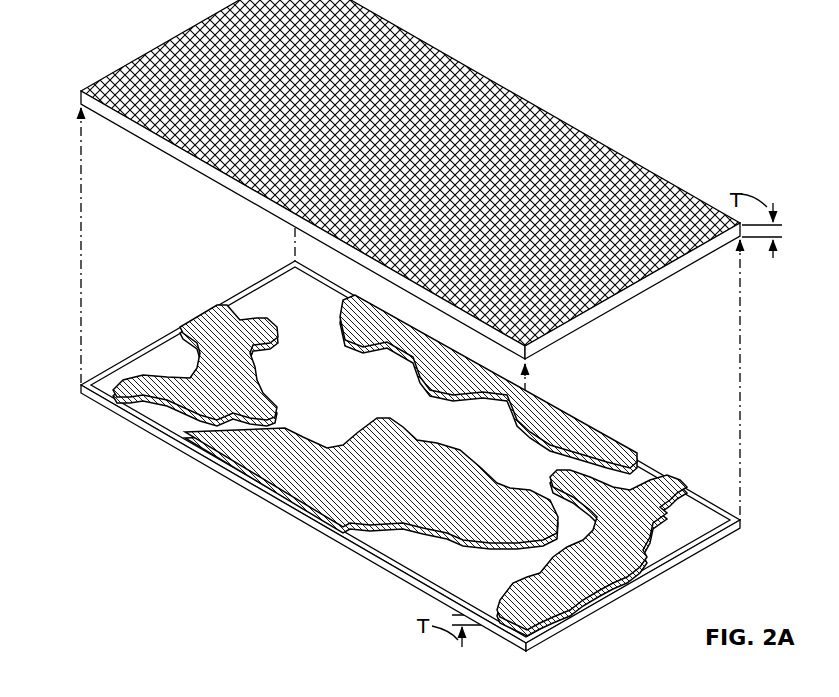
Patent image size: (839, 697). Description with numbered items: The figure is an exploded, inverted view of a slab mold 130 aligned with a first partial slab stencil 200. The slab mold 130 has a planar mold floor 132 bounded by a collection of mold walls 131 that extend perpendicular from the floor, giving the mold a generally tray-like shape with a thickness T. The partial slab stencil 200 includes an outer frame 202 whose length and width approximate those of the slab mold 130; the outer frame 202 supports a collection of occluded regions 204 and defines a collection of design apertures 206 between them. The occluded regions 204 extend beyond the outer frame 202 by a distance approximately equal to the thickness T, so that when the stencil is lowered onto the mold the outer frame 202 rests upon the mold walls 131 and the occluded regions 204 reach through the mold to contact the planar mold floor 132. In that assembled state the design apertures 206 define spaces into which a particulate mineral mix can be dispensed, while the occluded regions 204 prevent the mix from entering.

The slab mold 130 is at (389, 179).
The mold walls 131 is at (143, 132).
The planar mold floor 132 is at (120, 88).
The partial slab stencil 200 is at (397, 465).
The outer frame 202 is at (400, 584).
The occluded regions 204 is at (207, 310).
The design apertures 206 is at (283, 296).